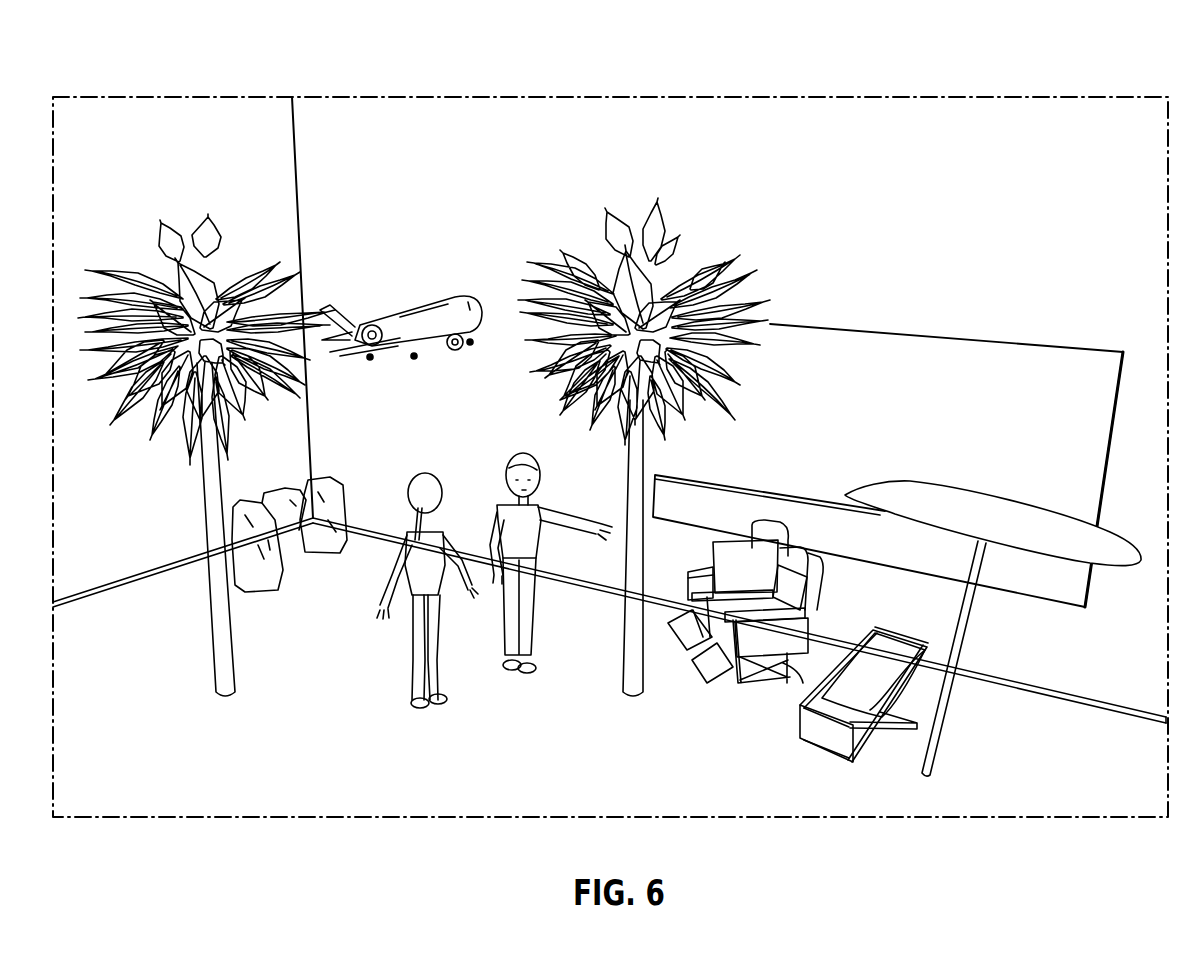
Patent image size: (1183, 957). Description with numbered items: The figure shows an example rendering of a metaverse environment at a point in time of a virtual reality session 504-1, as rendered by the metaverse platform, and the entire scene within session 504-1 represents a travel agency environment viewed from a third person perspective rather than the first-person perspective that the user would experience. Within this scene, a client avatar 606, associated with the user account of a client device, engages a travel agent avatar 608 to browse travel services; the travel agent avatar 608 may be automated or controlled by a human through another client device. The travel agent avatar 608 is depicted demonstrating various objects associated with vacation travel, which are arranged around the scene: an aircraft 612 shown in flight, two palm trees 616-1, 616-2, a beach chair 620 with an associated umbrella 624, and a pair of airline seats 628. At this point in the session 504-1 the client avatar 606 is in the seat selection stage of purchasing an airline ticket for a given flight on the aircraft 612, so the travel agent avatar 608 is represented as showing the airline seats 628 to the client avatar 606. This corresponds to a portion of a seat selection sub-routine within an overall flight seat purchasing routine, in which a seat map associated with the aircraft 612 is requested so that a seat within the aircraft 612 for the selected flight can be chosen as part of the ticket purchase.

The session 504-1 is at (826, 74).
The palm tree 616-1 is at (206, 212).
The palm tree 616-2 is at (690, 190).
The aircraft 612 is at (408, 303).
The client avatar 606 is at (426, 722).
The travel agent avatar 608 is at (527, 685).
The pair of airline seats 628 is at (696, 691).
The beach chair 620 is at (833, 750).
The umbrella 624 is at (946, 761).